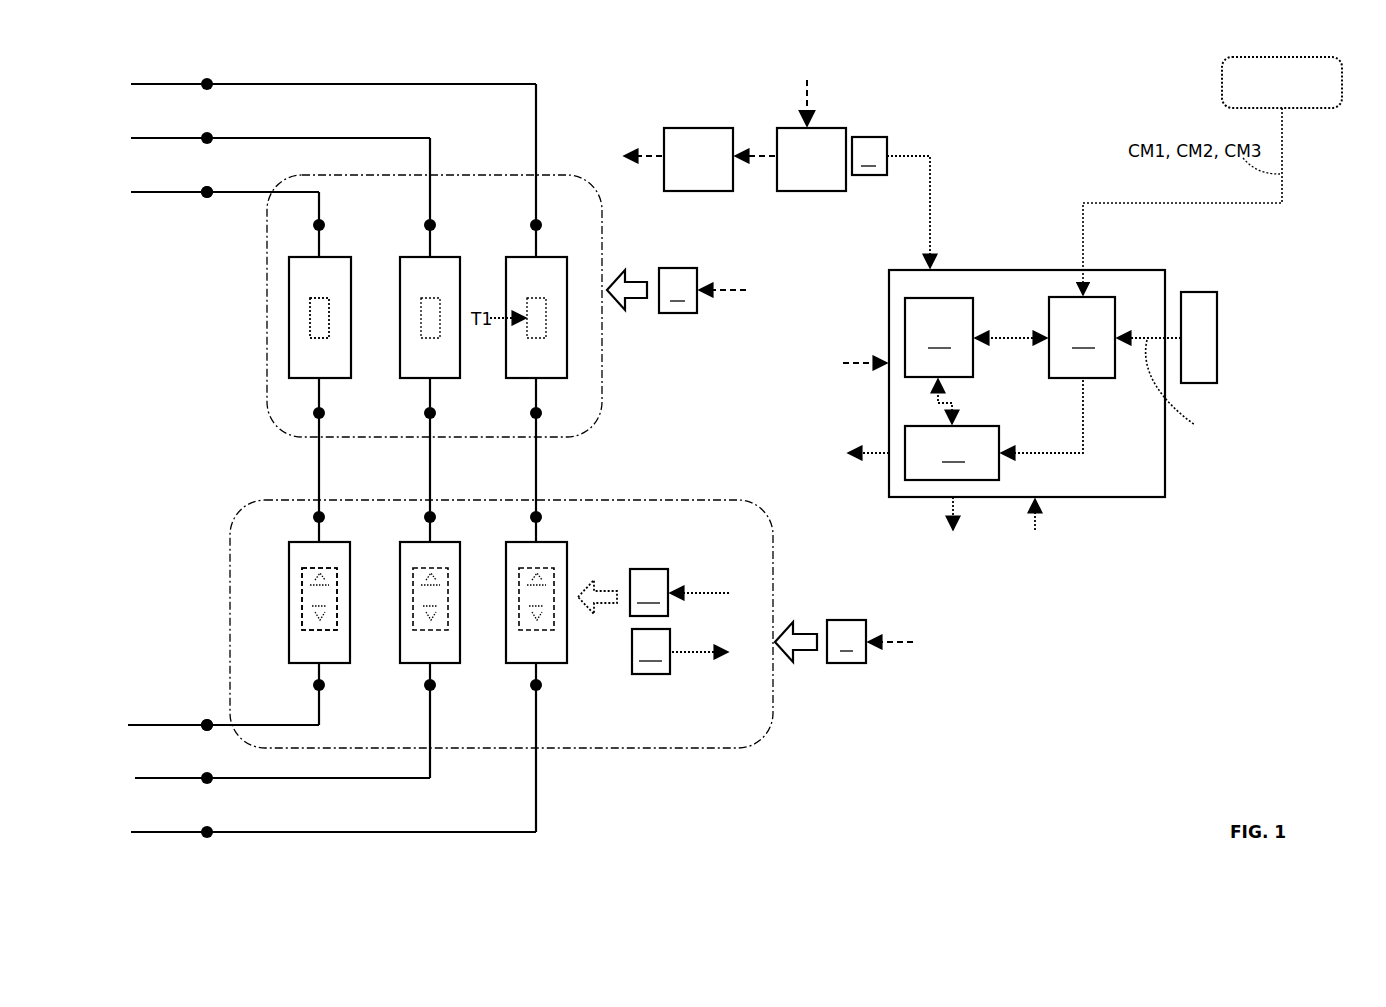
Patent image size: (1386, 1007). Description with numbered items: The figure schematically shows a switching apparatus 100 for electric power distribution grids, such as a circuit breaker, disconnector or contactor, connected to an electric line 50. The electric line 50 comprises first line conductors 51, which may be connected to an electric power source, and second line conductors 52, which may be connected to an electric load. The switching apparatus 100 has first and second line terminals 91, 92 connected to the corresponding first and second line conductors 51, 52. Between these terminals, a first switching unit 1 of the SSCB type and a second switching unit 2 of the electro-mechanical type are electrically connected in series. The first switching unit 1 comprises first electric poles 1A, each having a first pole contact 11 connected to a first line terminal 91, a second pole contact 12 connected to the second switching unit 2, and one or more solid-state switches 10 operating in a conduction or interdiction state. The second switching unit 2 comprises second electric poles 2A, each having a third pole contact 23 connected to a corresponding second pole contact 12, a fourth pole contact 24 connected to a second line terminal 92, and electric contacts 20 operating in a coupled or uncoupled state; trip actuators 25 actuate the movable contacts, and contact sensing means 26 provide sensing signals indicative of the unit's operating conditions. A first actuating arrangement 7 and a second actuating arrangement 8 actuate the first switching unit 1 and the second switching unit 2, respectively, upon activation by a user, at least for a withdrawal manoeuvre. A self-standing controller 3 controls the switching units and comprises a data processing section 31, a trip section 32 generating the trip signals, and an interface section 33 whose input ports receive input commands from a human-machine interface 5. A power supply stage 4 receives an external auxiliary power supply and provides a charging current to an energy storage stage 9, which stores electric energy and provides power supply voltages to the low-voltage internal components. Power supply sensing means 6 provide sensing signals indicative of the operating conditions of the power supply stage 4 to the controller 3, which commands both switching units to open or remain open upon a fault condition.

The first switching unit 1 is at (266, 281).
The first electric pole 1A is at (568, 273).
The second switching unit 2 is at (230, 540).
The second electric pole 2A is at (568, 560).
The controller 3 is at (1106, 489).
The power supply stage 4 is at (806, 192).
The human-machine interface 5 is at (1193, 307).
The power supply sensing means 6 is at (905, 202).
The first actuating arrangement 7 is at (676, 289).
The second actuating arrangement 8 is at (844, 639).
The energy storage stage 9 is at (692, 192).
The solid-state switch 10 is at (329, 320).
The first pole contact 11 is at (321, 227).
The second pole contact 12 is at (321, 416).
The electric contacts 20 is at (303, 600).
The third pole contact 23 is at (321, 515).
The fourth pole contact 24 is at (321, 684).
The trip actuator 25 is at (667, 592).
The contact sensing means 26 is at (695, 651).
The data processing section 31 is at (952, 453).
The trip section 32 is at (976, 361).
The interface section 33 is at (1058, 375).
The electric line 50 is at (93, 84).
The first line conductor 51 is at (162, 193).
The second line conductor 52 is at (160, 724).
The first line terminal 91 is at (208, 195).
The second line terminal 92 is at (208, 722).
The switching apparatus 100 is at (1025, 632).